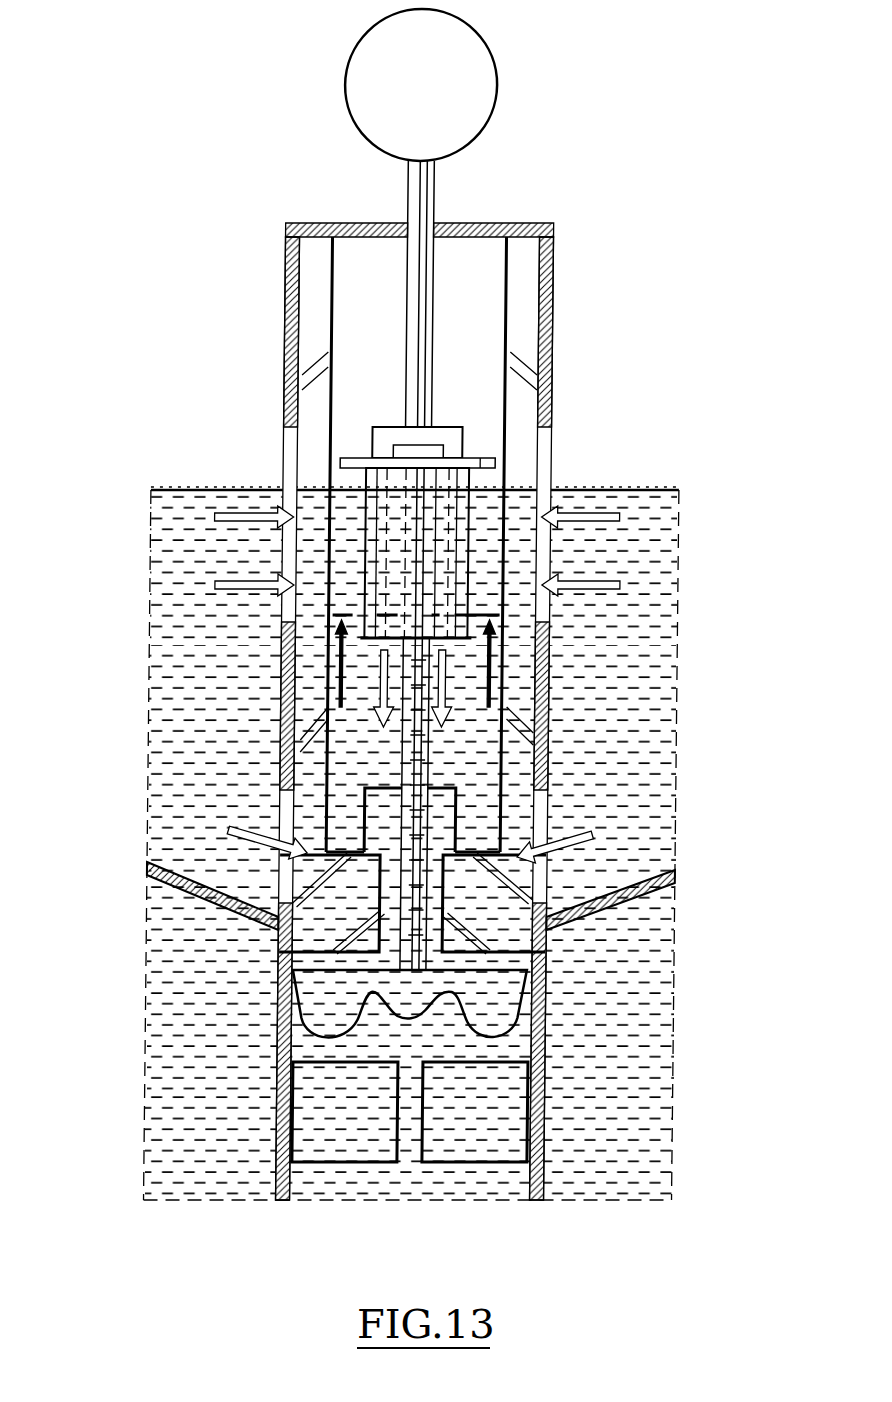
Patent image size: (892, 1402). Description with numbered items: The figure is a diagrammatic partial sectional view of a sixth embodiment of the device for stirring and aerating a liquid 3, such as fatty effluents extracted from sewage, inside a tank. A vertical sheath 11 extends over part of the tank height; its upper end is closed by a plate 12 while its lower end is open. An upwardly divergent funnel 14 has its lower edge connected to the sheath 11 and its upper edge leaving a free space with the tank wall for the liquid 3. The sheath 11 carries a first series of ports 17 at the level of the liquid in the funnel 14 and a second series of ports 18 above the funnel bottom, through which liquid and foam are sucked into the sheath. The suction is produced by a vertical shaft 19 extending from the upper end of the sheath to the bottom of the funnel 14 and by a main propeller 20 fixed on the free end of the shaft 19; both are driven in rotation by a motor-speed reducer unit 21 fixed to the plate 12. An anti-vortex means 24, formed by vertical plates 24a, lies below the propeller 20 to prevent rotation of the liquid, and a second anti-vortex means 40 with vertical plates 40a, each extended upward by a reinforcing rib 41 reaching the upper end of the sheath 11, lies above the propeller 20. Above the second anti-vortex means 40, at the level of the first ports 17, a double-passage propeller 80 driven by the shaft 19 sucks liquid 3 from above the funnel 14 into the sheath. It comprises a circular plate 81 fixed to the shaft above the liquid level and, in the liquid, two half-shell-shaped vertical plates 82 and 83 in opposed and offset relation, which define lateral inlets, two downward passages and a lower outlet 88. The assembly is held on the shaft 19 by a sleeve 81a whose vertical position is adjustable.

The liquid 3 is at (638, 606).
The sheath 11 is at (554, 1180).
The plate 12 is at (476, 228).
The funnel 14 is at (639, 905).
The first series of ports 17 is at (297, 445).
The second series of ports 18 is at (556, 815).
The vertical shaft 19 is at (434, 357).
The main propeller 20 is at (512, 998).
The motor-speed reducer unit 21 is at (493, 123).
The anti-vortex means 24 is at (307, 1125).
The vertical plates 24a is at (509, 1120).
The second anti-vortex means 40 is at (305, 960).
The vertical plates 40a is at (288, 926).
The reinforcing rib 41 is at (325, 304).
The double-passage propeller 80 is at (486, 592).
The circular plate 81 is at (493, 452).
The sleeve 81a is at (380, 450).
The vertical plate 82 is at (373, 562).
The vertical plate 83 is at (461, 547).
The lower outlet 88 is at (460, 640).